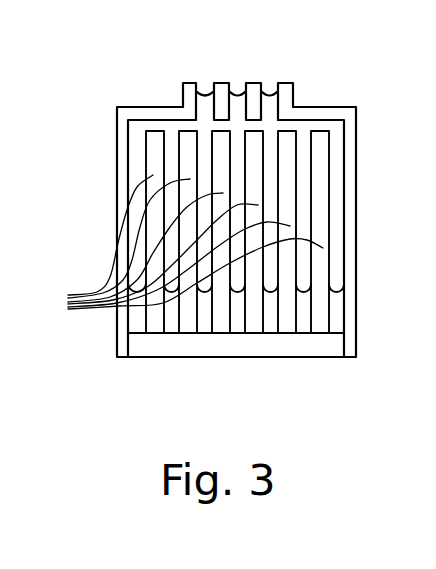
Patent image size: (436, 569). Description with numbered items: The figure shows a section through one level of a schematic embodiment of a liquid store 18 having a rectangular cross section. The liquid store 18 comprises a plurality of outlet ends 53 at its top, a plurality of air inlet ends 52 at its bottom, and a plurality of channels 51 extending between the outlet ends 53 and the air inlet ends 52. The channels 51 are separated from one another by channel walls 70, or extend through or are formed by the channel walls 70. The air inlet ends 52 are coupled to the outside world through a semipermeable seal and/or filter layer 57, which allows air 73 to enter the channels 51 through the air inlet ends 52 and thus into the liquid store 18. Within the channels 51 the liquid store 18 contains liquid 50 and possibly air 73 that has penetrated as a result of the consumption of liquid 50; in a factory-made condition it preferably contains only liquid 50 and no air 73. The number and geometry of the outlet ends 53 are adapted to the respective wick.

The liquid store 18 is at (85, 331).
The liquid 50 is at (330, 288).
The channels 51 is at (337, 172).
The air inlet ends 52 is at (198, 335).
The outlet ends 53 is at (207, 92).
The semipermeable seal and/or filter layer 57 is at (228, 342).
The channel walls 70 is at (178, 245).
The air 73 is at (140, 320).